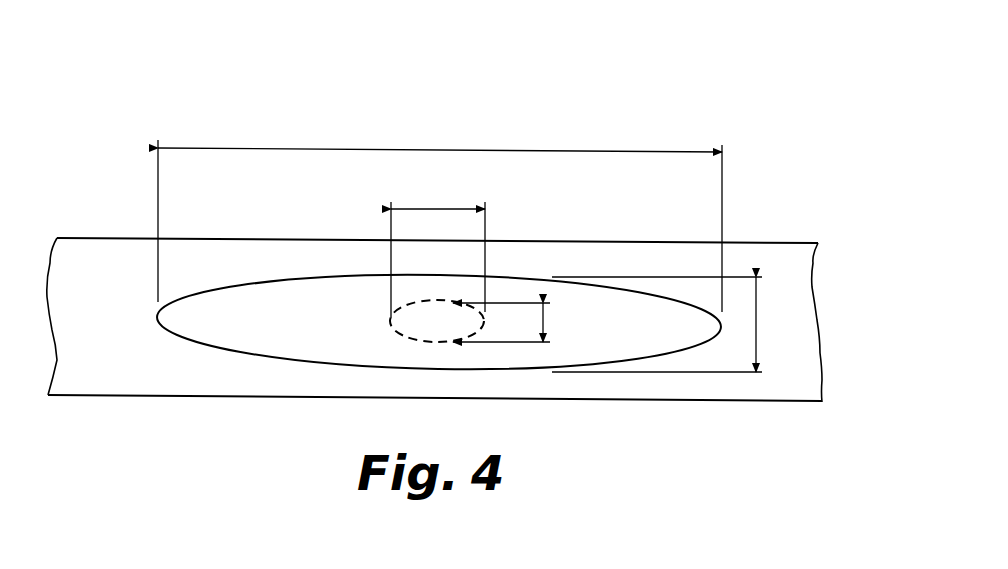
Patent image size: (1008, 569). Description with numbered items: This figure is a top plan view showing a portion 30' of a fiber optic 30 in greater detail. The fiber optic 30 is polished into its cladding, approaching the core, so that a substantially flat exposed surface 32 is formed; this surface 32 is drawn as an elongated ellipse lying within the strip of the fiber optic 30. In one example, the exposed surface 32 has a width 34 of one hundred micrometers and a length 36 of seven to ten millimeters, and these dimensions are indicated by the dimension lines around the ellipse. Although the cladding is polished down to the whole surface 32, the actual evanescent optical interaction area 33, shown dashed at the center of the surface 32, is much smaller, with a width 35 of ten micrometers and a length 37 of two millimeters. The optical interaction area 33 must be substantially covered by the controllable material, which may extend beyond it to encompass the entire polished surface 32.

The fiber optic 30 is at (465, 320).
The portion of fiber optic 30' is at (437, 124).
The exposed surface 32 is at (233, 353).
The evanescent optical interaction area 33 is at (390, 318).
The width 34 is at (758, 327).
The width 35 is at (545, 323).
The length 36 is at (433, 148).
The length 37 is at (432, 208).